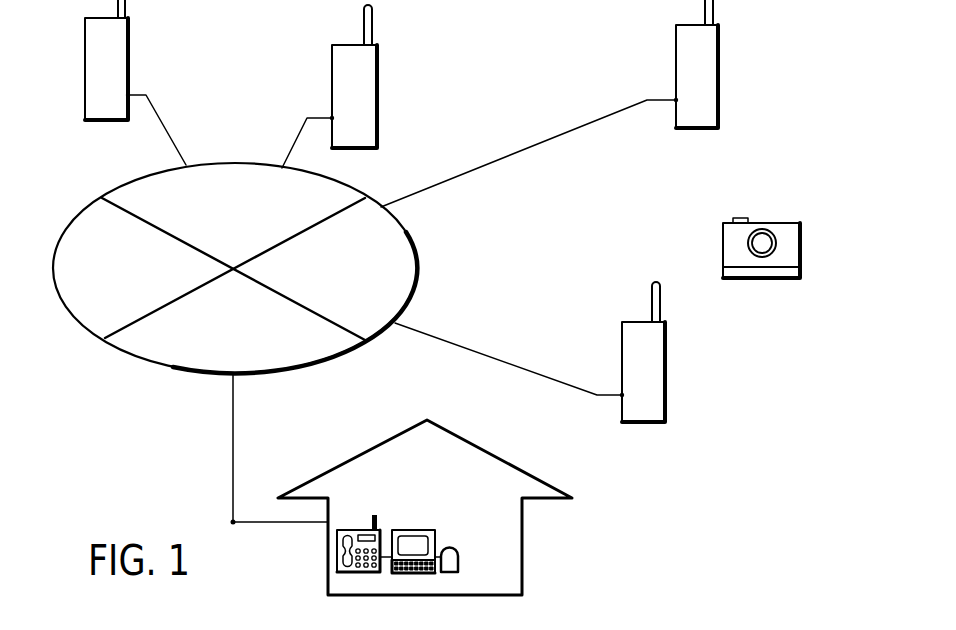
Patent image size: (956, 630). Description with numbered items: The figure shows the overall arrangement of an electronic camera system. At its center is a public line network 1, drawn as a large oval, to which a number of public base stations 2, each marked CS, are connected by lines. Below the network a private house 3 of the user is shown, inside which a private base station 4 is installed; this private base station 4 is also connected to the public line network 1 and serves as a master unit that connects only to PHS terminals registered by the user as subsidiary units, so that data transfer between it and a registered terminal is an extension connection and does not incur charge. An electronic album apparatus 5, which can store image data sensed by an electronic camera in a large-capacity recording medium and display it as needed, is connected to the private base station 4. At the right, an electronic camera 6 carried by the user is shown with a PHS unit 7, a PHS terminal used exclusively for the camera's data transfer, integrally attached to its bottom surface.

The public line network 1 is at (415, 237).
The public base station 2 is at (128, 37).
The private house 3 is at (363, 452).
The private base station 4 is at (355, 575).
The electronic album apparatus 5 is at (400, 527).
The electronic camera 6 is at (785, 232).
The PHS unit 7 is at (785, 279).